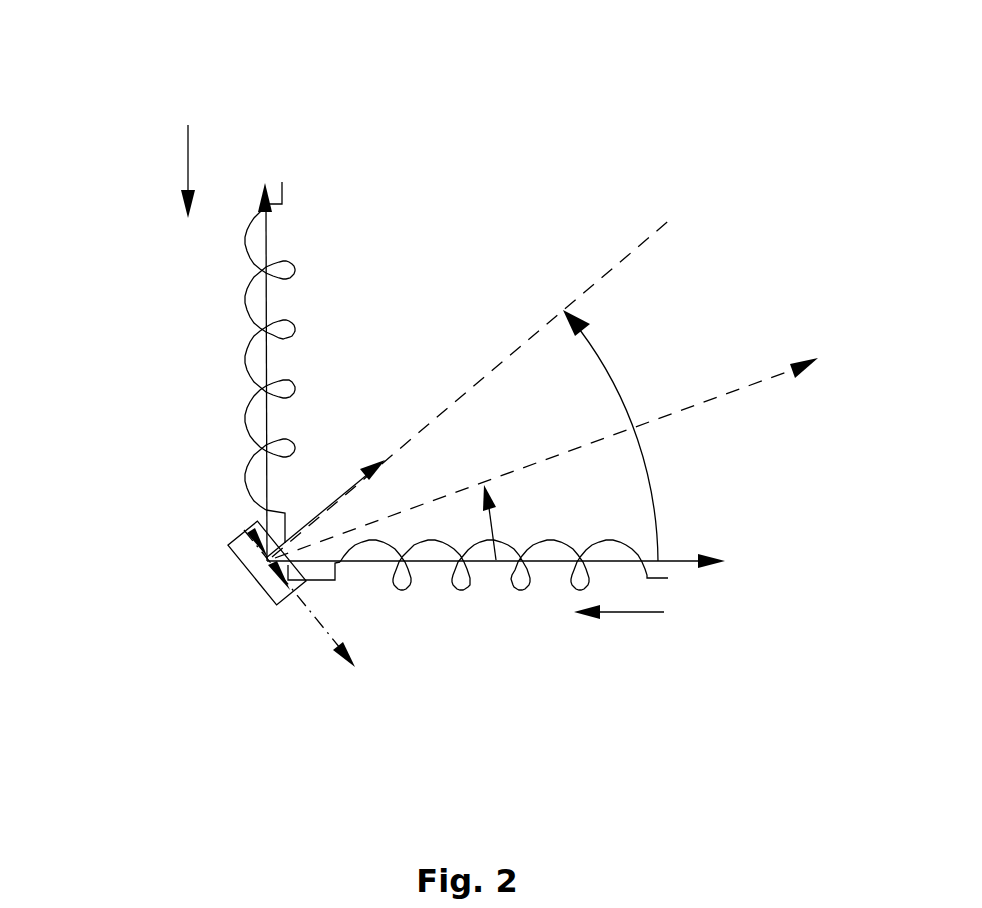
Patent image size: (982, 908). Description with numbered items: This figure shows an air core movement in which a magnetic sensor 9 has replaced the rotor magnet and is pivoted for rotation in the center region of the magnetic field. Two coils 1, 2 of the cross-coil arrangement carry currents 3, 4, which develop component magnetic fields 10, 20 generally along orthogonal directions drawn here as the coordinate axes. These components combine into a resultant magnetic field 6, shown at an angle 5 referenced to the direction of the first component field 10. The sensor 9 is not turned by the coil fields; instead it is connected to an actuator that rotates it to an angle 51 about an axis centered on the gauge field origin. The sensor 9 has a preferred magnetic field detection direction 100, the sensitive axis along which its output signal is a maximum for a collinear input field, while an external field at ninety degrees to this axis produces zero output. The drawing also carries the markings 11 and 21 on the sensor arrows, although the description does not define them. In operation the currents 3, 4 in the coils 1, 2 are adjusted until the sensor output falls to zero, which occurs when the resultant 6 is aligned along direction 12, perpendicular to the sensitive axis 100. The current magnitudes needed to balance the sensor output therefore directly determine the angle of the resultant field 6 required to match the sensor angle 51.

The coil 1 is at (608, 540).
The coil 2 is at (285, 262).
The current 3 is at (633, 612).
The current 4 is at (188, 148).
The angle 5 is at (497, 528).
The resultant magnetic field 6 is at (712, 400).
The magnetic sensor 9 is at (243, 563).
The component magnetic field 10 is at (705, 566).
The sensor sensitivity direction C2 11 is at (320, 520).
The direction 12 is at (596, 283).
The component magnetic field 20 is at (262, 185).
The sensor sensitivity direction C1 21 is at (313, 623).
The angle 51 is at (606, 350).
The preferred magnetic field detection direction 100 is at (265, 590).